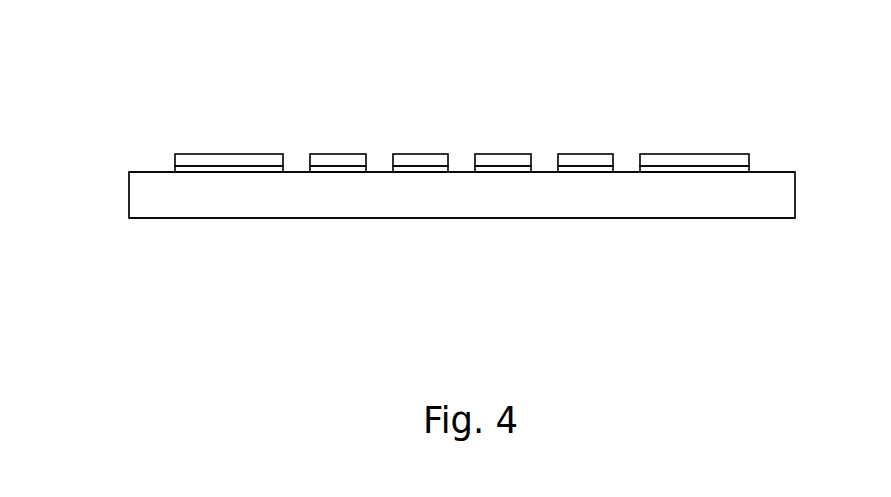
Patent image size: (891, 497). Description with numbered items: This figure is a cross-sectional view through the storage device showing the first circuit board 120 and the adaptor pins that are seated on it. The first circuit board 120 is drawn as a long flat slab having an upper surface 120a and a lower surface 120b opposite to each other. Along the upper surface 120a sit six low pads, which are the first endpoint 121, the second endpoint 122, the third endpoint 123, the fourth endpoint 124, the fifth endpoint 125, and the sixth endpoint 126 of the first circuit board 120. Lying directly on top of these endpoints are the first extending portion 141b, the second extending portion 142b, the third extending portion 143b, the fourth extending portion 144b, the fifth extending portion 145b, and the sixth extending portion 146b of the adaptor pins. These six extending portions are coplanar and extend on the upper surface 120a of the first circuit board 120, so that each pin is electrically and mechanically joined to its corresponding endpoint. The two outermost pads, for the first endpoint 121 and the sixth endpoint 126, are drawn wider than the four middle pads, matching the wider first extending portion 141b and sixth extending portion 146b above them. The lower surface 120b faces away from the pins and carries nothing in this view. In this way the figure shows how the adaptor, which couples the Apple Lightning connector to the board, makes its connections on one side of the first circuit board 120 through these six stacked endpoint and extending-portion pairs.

The first circuit board 120 is at (775, 198).
The upper surface 120a is at (153, 172).
The lower surface 120b is at (153, 218).
The first endpoint 121 is at (245, 167).
The second endpoint 122 is at (352, 167).
The third endpoint 123 is at (428, 167).
The fourth endpoint 124 is at (508, 167).
The fifth endpoint 125 is at (602, 167).
The sixth endpoint 126 is at (707, 167).
The first extending portion 141b is at (213, 160).
The second extending portion 142b is at (320, 161).
The third extending portion 143b is at (397, 161).
The fourth extending portion 144b is at (480, 161).
The fifth extending portion 145b is at (560, 161).
The sixth extending portion 146b is at (673, 161).